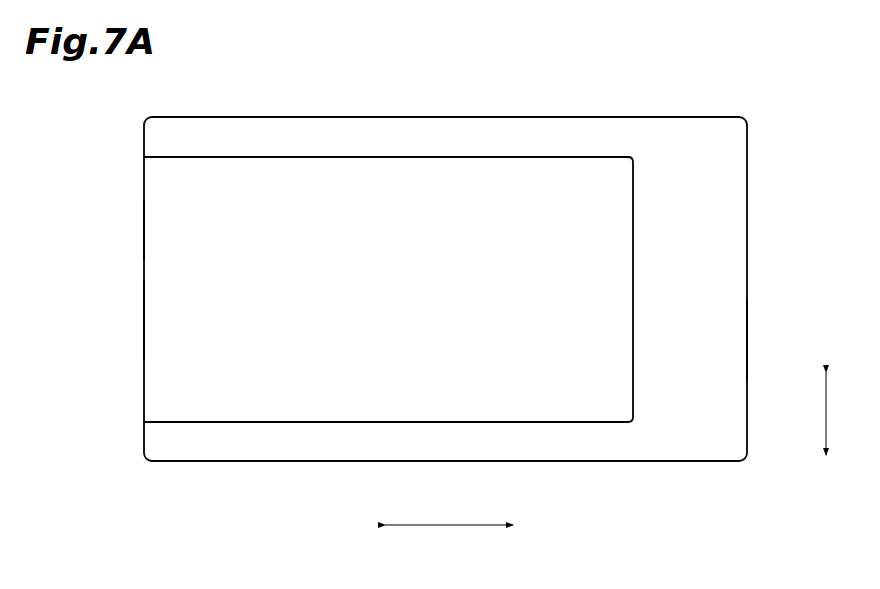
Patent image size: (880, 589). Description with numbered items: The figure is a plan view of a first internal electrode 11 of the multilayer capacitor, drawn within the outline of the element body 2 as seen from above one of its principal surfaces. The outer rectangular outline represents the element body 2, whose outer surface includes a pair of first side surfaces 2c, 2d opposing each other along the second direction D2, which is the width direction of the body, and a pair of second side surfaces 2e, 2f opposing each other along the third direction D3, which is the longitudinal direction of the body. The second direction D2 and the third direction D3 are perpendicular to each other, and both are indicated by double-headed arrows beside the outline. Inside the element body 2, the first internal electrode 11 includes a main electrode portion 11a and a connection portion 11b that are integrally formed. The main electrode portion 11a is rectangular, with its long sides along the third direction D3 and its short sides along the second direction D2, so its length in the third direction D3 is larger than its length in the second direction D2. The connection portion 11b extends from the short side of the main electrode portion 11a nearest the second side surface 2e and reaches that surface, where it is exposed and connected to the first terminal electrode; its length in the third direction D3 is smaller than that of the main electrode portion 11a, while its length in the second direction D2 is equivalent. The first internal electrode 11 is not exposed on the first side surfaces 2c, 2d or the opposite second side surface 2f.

The element body 2 is at (741, 206).
The first side surface 2c is at (522, 462).
The first side surface 2d is at (440, 117).
The second side surface 2e is at (142, 313).
The second side surface 2f is at (750, 343).
The first internal electrode 11 is at (335, 156).
The main electrode portion 11a is at (527, 192).
The connection portion 11b is at (167, 228).
The second direction D2 is at (826, 420).
The third direction D3 is at (448, 528).